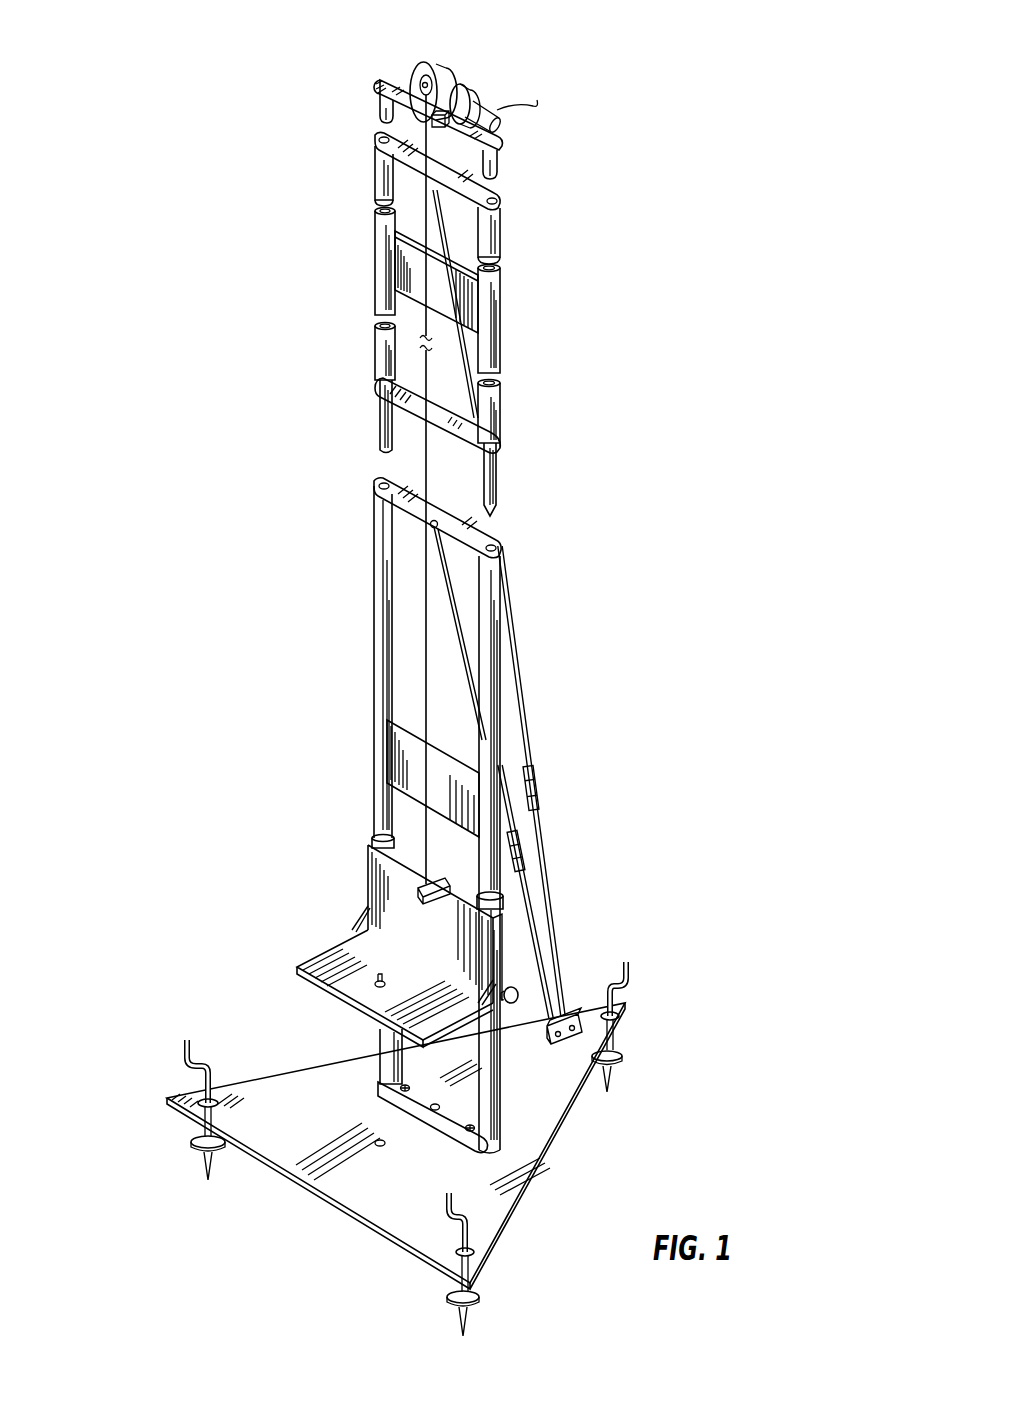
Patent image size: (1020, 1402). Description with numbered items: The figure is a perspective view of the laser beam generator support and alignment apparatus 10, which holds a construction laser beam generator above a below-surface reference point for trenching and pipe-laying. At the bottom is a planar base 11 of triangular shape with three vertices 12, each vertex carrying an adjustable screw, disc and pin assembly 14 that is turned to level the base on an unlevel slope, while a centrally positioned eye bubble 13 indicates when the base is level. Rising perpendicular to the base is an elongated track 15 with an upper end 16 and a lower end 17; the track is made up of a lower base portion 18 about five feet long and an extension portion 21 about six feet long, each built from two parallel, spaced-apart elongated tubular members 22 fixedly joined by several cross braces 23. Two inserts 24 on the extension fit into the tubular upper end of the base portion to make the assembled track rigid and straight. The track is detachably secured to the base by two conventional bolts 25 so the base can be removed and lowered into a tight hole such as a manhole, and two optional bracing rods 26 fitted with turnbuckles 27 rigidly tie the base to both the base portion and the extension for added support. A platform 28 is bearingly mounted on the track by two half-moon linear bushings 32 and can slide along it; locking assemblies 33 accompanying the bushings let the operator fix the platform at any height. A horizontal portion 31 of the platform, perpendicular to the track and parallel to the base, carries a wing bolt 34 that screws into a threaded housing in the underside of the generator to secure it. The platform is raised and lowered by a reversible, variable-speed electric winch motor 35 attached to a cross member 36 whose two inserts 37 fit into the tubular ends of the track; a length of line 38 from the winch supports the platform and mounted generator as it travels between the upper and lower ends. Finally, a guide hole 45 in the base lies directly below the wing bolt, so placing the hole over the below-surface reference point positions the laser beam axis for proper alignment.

The laser beam generator support and alignment apparatus 10 is at (158, 416).
The planar base 11 is at (280, 1150).
The vertices 12 is at (200, 1106).
The eye bubble 13 is at (434, 1112).
The adjustable screw, disc and pin assembly 14 is at (168, 1156).
The elongated track 15 is at (360, 674).
The upper end 16 is at (366, 178).
The lower end 17 is at (368, 1047).
The lower base portion 18 is at (363, 538).
The extension portion 21 is at (362, 349).
The elongated tubular members 22 is at (384, 290).
The cross braces 23 is at (462, 302).
The inserts 24 is at (383, 421).
The bolts 25 is at (400, 1091).
The bracing rods 26 is at (535, 921).
The turnbuckles 27 is at (522, 856).
The platform 28 is at (378, 874).
The horizontal portion 31 is at (332, 968).
The half-moon linear bushings 32 is at (371, 839).
The locking assemblies 33 is at (515, 1002).
The wing bolt 34 is at (376, 985).
The electric winch motor 35 is at (455, 88).
The cross member 36 is at (404, 70).
The inserts 37 is at (378, 108).
The line 38 is at (424, 596).
The guide hole 45 is at (375, 1146).